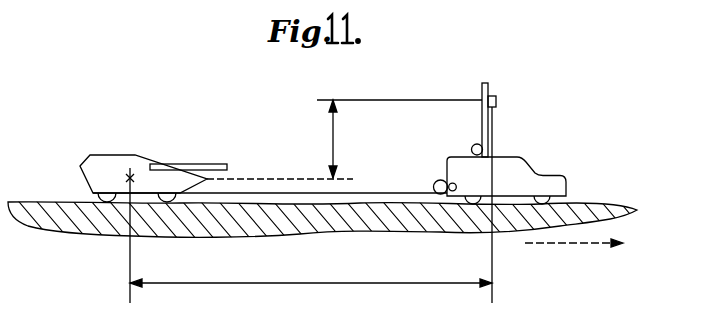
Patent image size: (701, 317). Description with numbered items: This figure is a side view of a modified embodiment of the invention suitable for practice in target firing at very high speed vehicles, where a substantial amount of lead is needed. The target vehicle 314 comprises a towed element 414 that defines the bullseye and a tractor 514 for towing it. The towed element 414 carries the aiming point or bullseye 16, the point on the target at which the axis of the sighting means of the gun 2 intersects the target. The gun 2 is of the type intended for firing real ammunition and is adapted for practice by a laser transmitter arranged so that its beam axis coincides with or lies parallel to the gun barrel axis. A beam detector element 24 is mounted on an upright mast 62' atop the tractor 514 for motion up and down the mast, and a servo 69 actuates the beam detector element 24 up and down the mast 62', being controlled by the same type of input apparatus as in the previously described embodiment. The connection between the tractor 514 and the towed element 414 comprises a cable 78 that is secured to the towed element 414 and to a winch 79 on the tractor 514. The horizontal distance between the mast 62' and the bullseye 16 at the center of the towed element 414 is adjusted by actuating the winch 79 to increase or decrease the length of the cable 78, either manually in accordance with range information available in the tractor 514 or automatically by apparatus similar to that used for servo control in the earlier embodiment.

The gun 2 is at (200, 164).
The aiming point 16 is at (130, 168).
The beam detector element 24 is at (496, 100).
The upright mast 62' is at (463, 109).
The servo 69 is at (474, 146).
The cable 78 is at (385, 193).
The winch 79 is at (434, 181).
The target vehicle 314 is at (112, 155).
The towed element 414 is at (124, 150).
The tractor 514 is at (458, 165).